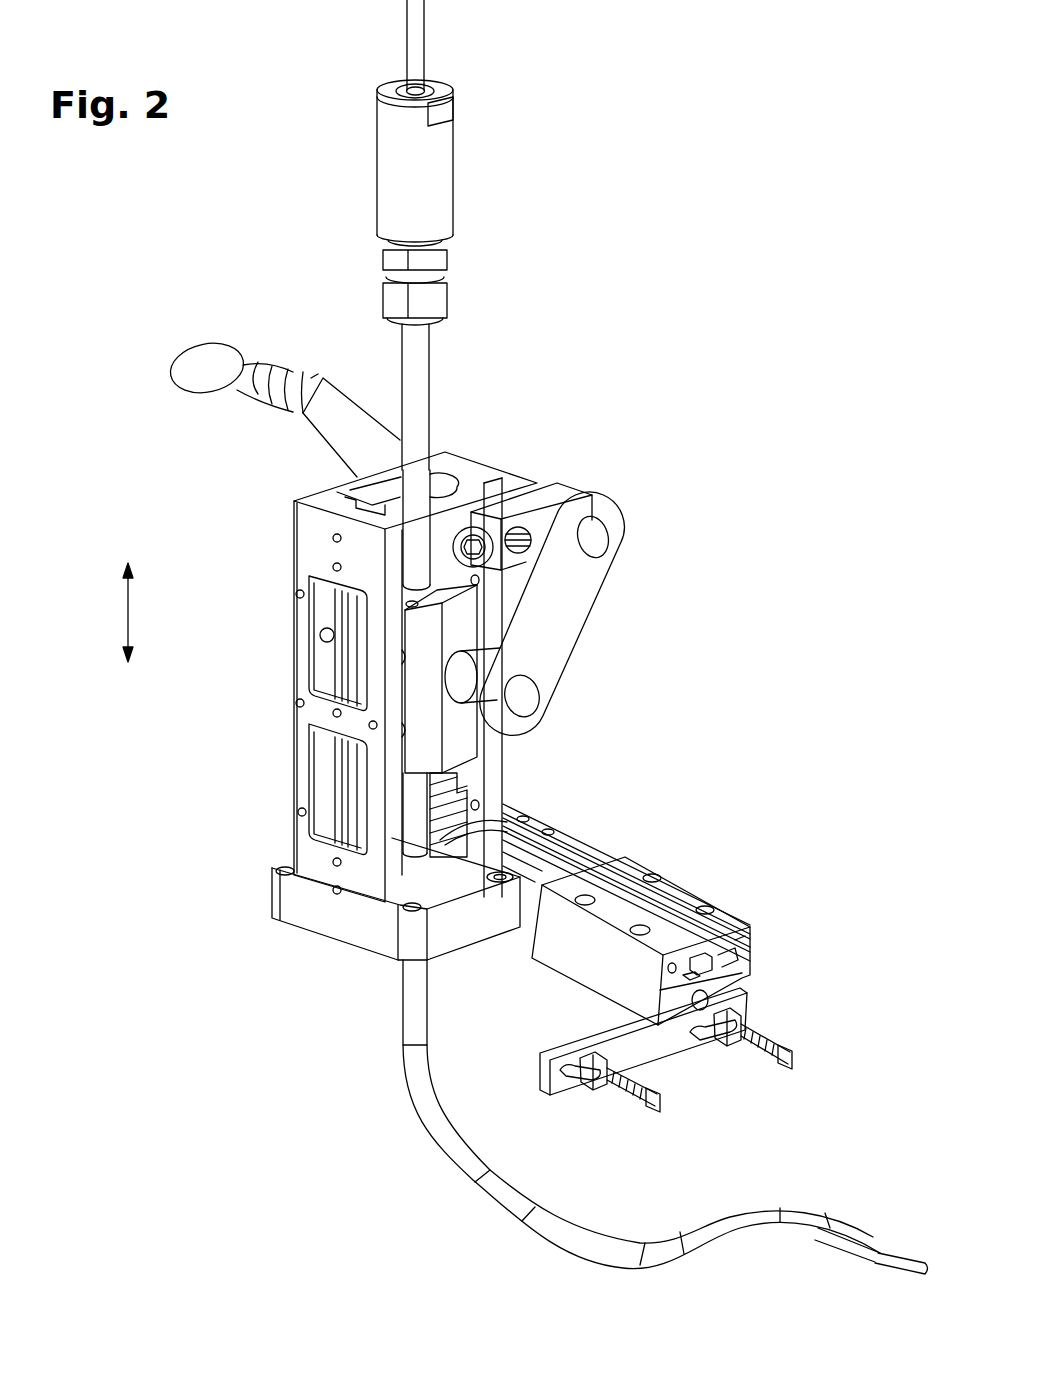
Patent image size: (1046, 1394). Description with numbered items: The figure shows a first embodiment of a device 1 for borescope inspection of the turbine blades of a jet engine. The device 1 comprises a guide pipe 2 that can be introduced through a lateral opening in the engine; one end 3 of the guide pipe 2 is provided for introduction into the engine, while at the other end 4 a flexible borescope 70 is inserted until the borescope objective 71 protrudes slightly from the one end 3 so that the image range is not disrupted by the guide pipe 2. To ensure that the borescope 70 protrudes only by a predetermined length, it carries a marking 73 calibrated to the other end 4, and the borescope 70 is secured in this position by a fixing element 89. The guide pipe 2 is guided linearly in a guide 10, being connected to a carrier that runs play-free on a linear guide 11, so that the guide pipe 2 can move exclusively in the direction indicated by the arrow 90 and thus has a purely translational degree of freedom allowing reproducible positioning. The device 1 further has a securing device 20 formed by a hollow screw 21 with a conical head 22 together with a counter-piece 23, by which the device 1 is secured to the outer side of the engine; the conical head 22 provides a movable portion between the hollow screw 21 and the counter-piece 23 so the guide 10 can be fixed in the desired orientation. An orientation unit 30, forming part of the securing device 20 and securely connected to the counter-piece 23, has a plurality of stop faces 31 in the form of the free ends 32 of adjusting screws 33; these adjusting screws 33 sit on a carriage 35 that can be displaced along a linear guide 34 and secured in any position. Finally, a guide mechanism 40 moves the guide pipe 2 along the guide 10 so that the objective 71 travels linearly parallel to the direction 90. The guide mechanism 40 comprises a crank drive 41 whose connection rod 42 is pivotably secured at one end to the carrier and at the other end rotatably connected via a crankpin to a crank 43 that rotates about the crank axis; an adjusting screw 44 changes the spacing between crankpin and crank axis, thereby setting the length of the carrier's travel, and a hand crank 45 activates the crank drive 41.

The device 1 is at (832, 265).
The guide pipe 2 is at (745, 1232).
The one end 3 is at (885, 1252).
The other end 4 is at (436, 82).
The guide 10 is at (316, 538).
The linear guide 11 is at (343, 657).
The securing device 20 is at (359, 936).
The hollow screw 21 is at (470, 830).
The conical head 22 is at (490, 848).
The counter-piece 23 is at (296, 918).
The orientation unit 30 is at (648, 908).
The stop faces 31 is at (792, 1062).
The free ends 32 is at (795, 1055).
The adjusting screws 33 is at (762, 1030).
The linear guide 34 is at (680, 912).
The carriage 35 is at (738, 930).
The guide mechanism 40 is at (608, 465).
The crank drive 41 is at (606, 630).
The connection rod 42 is at (578, 578).
The crank 43 is at (548, 500).
The adjusting screw 44 is at (476, 528).
The hand crank 45 is at (213, 352).
The flexible borescope 70 is at (415, 18).
The borescope objective 71 is at (930, 1275).
The marking 73 is at (405, 88).
The fixing element 89 is at (402, 170).
The arrow 90 is at (117, 612).